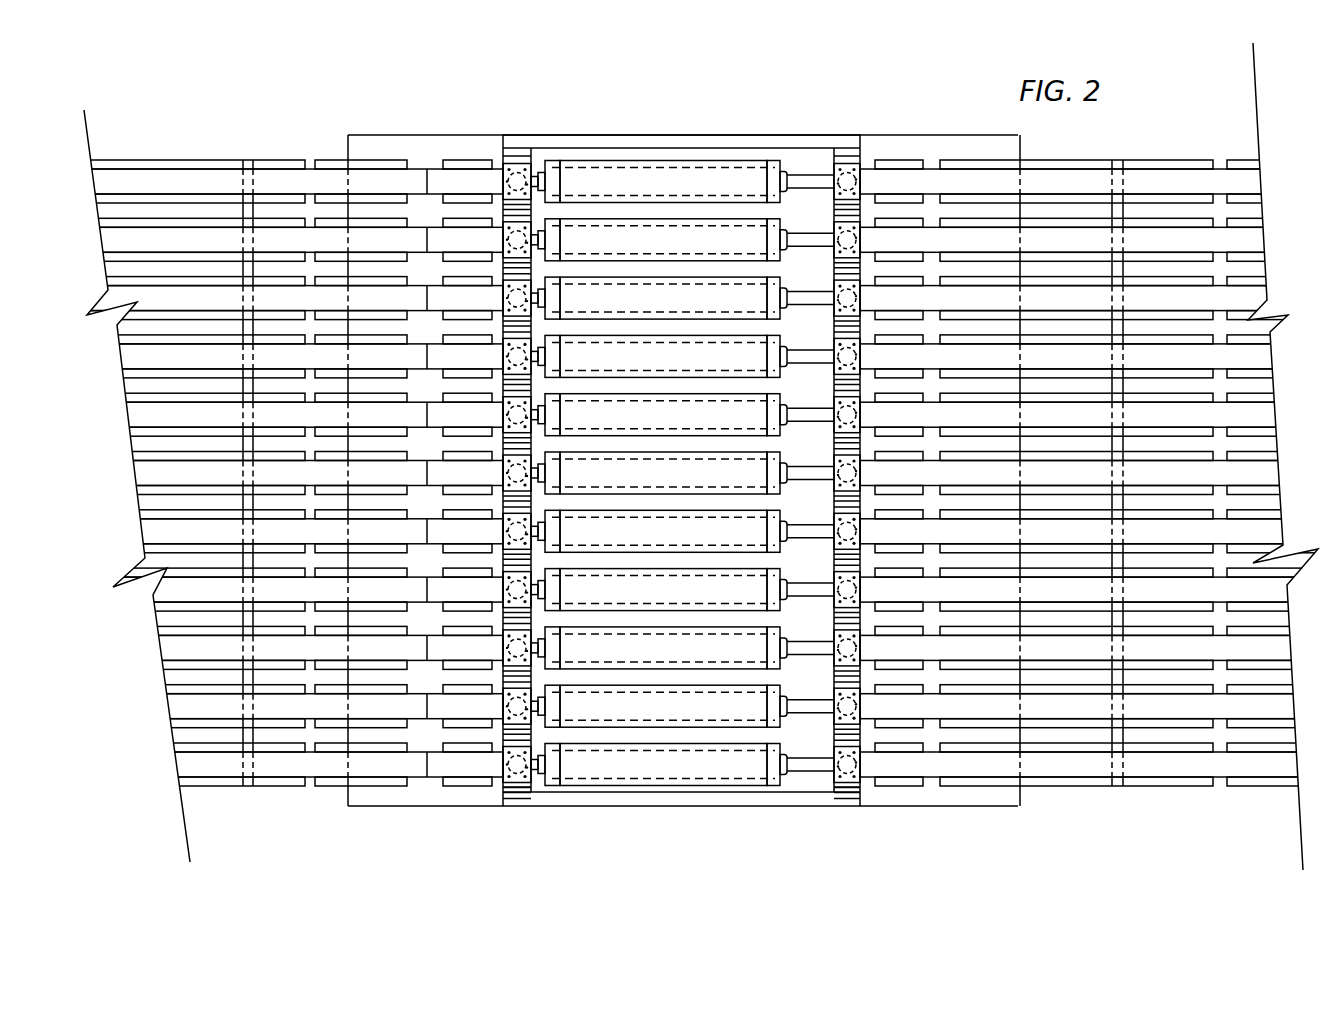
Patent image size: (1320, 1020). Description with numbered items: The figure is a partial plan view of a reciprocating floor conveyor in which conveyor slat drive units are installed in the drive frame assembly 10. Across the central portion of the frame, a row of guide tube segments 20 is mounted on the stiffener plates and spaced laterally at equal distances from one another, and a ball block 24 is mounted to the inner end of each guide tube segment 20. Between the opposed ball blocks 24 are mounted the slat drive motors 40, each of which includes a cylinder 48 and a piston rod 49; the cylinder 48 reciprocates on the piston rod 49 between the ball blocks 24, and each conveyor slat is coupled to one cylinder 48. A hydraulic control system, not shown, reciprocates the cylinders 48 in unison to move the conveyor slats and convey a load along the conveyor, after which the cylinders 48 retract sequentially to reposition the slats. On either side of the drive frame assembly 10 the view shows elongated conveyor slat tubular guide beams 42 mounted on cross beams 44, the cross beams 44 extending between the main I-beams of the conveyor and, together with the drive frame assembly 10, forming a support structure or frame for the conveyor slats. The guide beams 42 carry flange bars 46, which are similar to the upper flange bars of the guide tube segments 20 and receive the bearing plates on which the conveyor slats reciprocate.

The drive frame assembly 10 is at (630, 126).
The guide tube segments 20 is at (460, 182).
The ball block 24 is at (522, 163).
The slat drive motors 40 is at (745, 172).
The conveyor slat tubular guide beams 42 is at (365, 245).
The cross beams 44 is at (245, 247).
The flange bars 46 is at (280, 198).
The cylinder 48 is at (657, 182).
The piston rod 49 is at (540, 172).